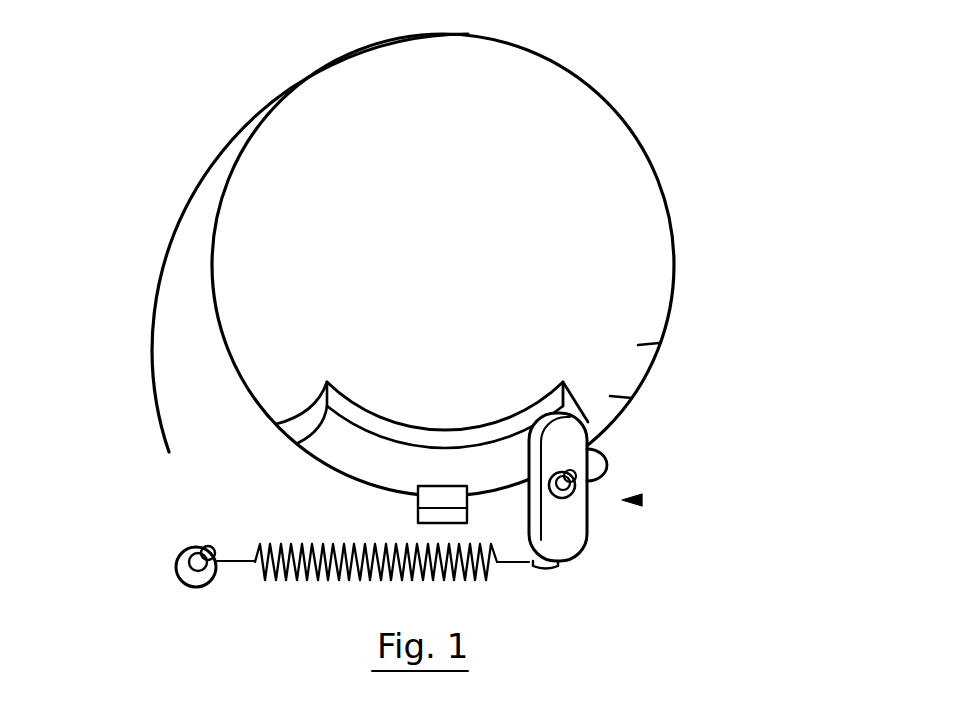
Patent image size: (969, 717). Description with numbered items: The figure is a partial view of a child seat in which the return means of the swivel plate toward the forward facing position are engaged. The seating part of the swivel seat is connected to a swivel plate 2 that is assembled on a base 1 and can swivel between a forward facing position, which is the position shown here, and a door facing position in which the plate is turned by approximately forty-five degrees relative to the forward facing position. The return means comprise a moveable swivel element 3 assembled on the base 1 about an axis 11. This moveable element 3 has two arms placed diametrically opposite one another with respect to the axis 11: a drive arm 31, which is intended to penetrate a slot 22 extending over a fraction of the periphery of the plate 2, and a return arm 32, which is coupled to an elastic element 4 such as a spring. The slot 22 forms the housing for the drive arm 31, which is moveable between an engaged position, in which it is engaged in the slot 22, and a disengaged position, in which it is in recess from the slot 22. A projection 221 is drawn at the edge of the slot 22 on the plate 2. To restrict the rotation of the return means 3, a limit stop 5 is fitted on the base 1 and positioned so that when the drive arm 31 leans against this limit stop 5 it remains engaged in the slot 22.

The base 1 is at (203, 375).
The swivel plate 2 is at (285, 198).
The slot 22 is at (367, 447).
The projection of clamping band 221 is at (572, 405).
The moveable swivel element 3 is at (641, 500).
The drive arm 31 is at (555, 430).
The return arm 32 is at (568, 548).
The axis 11 is at (567, 503).
The limit stop 5 is at (607, 455).
The elastic element 4 is at (333, 547).